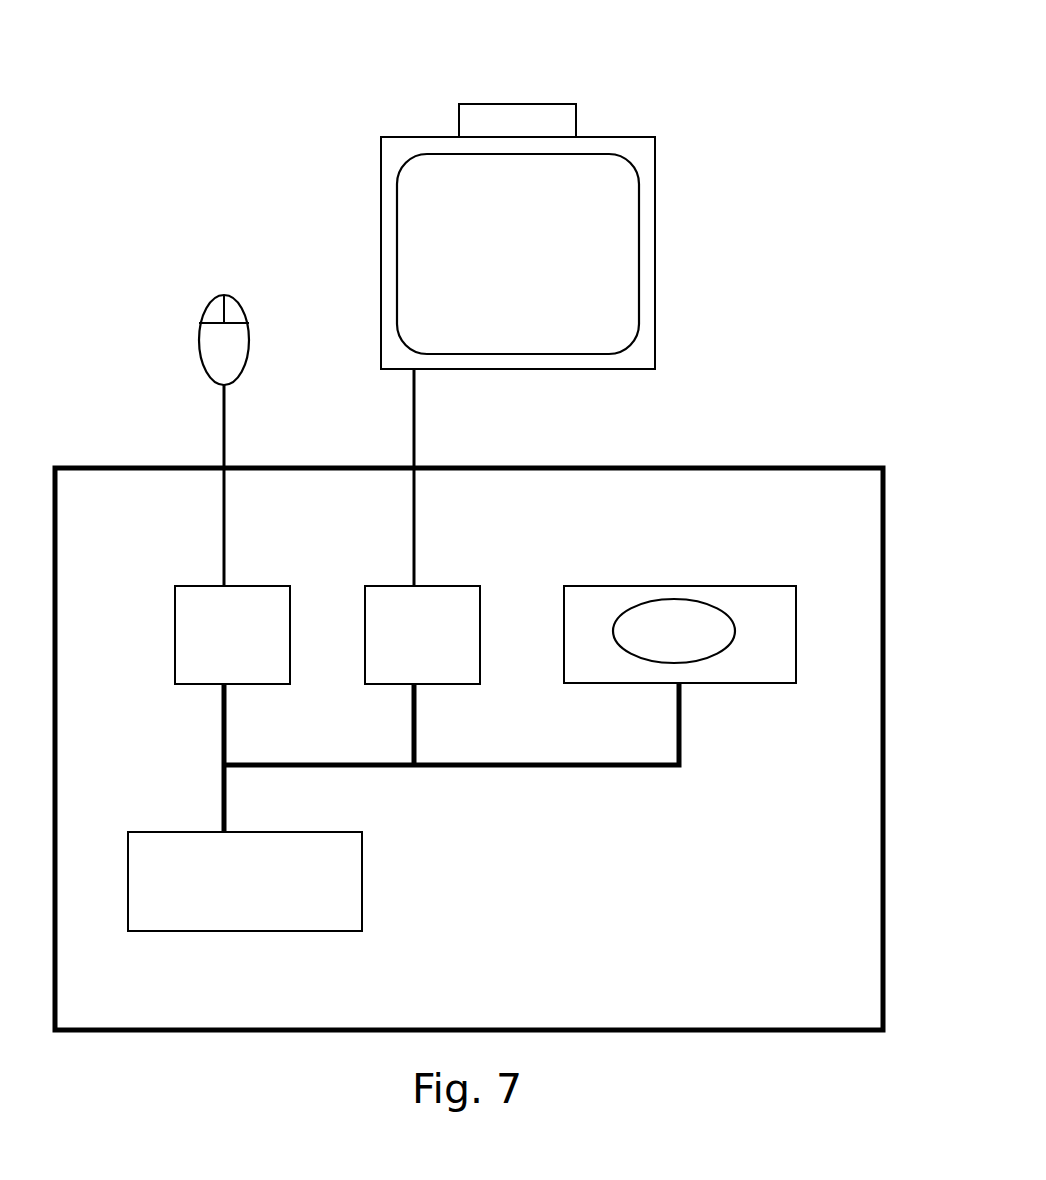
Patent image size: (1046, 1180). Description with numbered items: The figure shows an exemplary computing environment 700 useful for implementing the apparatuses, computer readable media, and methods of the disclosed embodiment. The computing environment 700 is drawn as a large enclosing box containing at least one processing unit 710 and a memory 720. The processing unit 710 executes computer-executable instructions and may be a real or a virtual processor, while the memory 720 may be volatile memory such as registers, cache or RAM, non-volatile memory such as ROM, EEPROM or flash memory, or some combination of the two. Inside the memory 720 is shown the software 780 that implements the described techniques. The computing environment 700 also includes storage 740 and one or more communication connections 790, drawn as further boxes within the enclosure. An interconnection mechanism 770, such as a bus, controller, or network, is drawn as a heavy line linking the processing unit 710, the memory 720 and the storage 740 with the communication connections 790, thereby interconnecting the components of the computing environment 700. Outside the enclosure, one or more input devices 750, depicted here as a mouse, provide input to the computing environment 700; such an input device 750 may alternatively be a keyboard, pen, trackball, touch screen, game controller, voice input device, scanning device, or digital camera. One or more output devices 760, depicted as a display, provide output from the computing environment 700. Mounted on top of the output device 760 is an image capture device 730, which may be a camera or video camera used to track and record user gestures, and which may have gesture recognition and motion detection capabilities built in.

The computing environment 700 is at (702, 466).
The processing unit 710 is at (448, 586).
The memory 720 is at (713, 586).
The image capture device 730 is at (544, 104).
The storage 740 is at (245, 586).
The input device 750 is at (240, 295).
The output device 760 is at (655, 298).
The interconnection mechanism 770 is at (458, 764).
The software 780 is at (716, 654).
The communication connection 790 is at (362, 898).